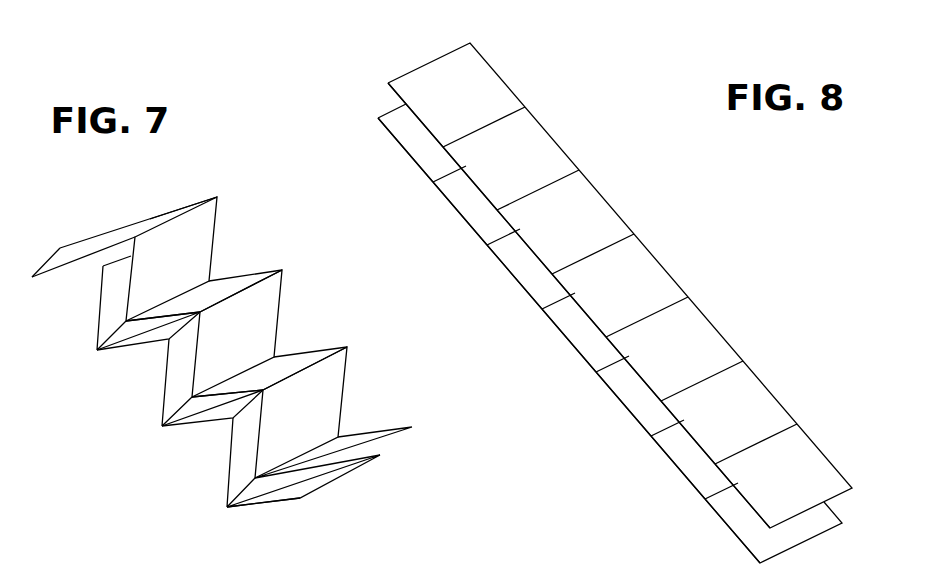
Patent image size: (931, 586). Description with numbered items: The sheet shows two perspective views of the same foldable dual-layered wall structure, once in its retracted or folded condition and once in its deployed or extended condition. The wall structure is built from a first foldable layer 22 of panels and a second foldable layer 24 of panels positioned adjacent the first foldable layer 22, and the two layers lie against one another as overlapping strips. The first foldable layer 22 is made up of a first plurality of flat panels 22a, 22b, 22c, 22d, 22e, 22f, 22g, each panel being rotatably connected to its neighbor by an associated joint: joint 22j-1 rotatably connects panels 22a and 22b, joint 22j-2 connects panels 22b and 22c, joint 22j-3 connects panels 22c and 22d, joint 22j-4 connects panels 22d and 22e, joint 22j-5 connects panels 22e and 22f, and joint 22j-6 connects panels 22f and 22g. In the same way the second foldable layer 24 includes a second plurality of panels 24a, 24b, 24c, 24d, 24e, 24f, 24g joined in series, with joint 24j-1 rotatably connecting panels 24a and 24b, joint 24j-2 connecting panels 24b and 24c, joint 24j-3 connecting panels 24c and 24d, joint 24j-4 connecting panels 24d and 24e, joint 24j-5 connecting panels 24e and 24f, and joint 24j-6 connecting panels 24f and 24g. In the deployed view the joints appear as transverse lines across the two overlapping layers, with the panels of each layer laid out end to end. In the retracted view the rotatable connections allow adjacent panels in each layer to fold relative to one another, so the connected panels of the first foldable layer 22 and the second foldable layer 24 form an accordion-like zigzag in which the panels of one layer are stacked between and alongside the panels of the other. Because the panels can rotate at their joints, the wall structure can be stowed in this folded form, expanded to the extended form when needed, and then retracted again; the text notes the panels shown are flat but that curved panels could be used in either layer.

In FIG. 8, the first foldable layer 22 is at (384, 110).
In FIG. 8, the second foldable layer 24 is at (422, 66).
In FIG. 7, the panel 22a is at (78, 260).
In FIG. 8, the panel 22a is at (427, 157).
In FIG. 7, the panel 22b is at (117, 287).
In FIG. 8, the panel 22b is at (481, 221).
In FIG. 7, the panel 22c is at (165, 332).
In FIG. 8, the panel 22c is at (536, 284).
In FIG. 7, the panel 22d is at (168, 378).
In FIG. 8, the panel 22d is at (591, 348).
In FIG. 7, the panel 22e is at (228, 405).
In FIG. 8, the panel 22e is at (645, 412).
In FIG. 7, the panel 22f is at (235, 455).
In FIG. 8, the panel 22f is at (700, 475).
In FIG. 7, the panel 22g is at (273, 492).
In FIG. 8, the panel 22g is at (787, 542).
In FIG. 7, the panel 24a is at (152, 212).
In FIG. 8, the panel 24a is at (484, 100).
In FIG. 7, the panel 24b is at (214, 222).
In FIG. 8, the panel 24b is at (538, 163).
In FIG. 7, the panel 24c is at (214, 287).
In FIG. 8, the panel 24c is at (593, 227).
In FIG. 7, the panel 24d is at (281, 295).
In FIG. 8, the panel 24d is at (647, 290).
In FIG. 7, the panel 24e is at (278, 350).
In FIG. 8, the panel 24e is at (702, 354).
In FIG. 7, the panel 24f is at (341, 398).
In FIG. 8, the panel 24f is at (756, 417).
In FIG. 7, the panel 24g is at (392, 443).
In FIG. 8, the panel 24g is at (795, 481).
In FIG. 7, the joint 22j-1 is at (122, 257).
In FIG. 8, the joint 22j-1 is at (433, 182).
In FIG. 8, the joint 22j-2 is at (487, 245).
In FIG. 8, the joint 22j-3 is at (542, 309).
In FIG. 8, the joint 22j-4 is at (596, 372).
In FIG. 8, the joint 22j-5 is at (651, 436).
In FIG. 8, the joint 22j-6 is at (705, 499).
In FIG. 7, the joint 24j-1 is at (181, 205).
In FIG. 8, the joint 24j-1 is at (512, 113).
In FIG. 7, the joint 24j-2 is at (118, 326).
In FIG. 8, the joint 24j-2 is at (567, 176).
In FIG. 7, the joint 24j-3 is at (282, 268).
In FIG. 8, the joint 24j-3 is at (621, 240).
In FIG. 7, the joint 24j-4 is at (168, 405).
In FIG. 8, the joint 24j-4 is at (676, 303).
In FIG. 7, the joint 24j-5 is at (346, 347).
In FIG. 8, the joint 24j-5 is at (731, 367).
In FIG. 7, the joint 24j-6 is at (226, 490).
In FIG. 8, the joint 24j-6 is at (785, 430).